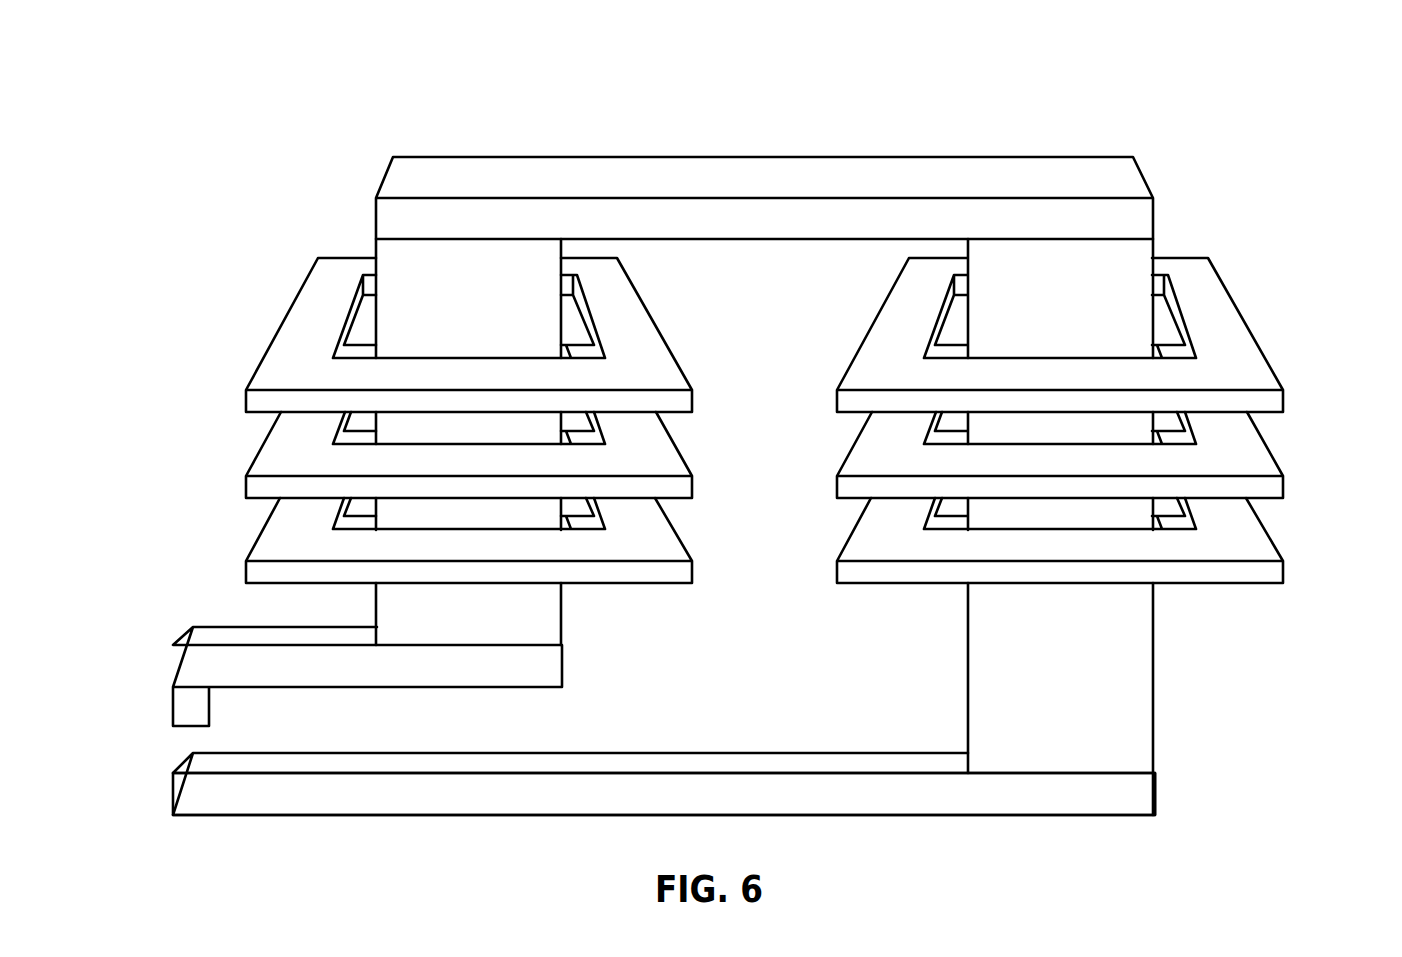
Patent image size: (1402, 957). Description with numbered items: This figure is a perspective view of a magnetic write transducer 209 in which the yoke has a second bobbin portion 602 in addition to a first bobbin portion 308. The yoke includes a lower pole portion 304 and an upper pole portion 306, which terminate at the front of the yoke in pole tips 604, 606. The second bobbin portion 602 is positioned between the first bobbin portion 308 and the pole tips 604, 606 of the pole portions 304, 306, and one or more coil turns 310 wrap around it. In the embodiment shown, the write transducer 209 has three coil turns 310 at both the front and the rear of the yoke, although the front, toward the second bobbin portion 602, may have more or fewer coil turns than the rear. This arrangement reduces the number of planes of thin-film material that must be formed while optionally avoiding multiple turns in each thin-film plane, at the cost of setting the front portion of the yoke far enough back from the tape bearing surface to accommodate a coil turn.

The write transducer 209 is at (132, 150).
The lower pole portion 304 is at (1063, 800).
The upper pole portion 306 is at (718, 178).
The first bobbin portion 308 is at (1122, 285).
The coil turns 310 is at (246, 487).
The second bobbin portion 602 is at (398, 278).
The pole tip 604 is at (173, 794).
The pole tip 606 is at (173, 705).